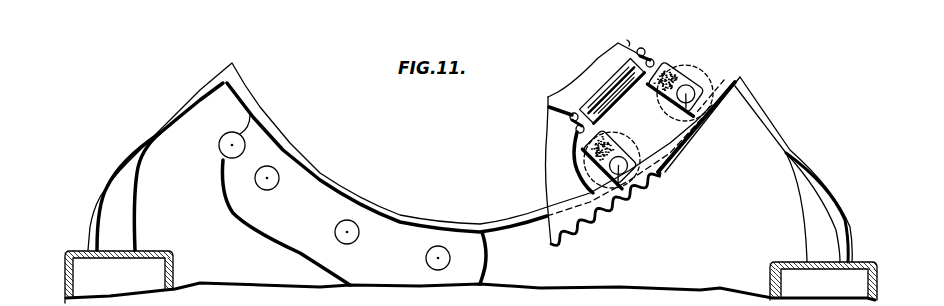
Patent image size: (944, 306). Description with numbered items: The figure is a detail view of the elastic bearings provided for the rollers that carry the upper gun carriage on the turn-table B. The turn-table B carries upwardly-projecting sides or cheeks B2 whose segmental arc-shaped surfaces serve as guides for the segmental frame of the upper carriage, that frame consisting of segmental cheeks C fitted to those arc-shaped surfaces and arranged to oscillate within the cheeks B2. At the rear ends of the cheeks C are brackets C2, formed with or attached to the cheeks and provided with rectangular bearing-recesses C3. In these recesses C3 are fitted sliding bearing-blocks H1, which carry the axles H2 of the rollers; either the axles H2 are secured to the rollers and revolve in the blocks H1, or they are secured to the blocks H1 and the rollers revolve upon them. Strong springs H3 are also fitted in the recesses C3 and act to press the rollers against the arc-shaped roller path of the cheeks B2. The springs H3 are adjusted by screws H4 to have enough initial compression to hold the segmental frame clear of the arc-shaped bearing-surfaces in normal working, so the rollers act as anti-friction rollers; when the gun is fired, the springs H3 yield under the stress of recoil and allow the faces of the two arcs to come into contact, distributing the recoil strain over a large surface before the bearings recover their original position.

The turn-table B is at (468, 277).
The upwardly-projecting sides or cheeks B2 is at (470, 174).
The segmental cheeks C is at (594, 142).
The brackets C2 is at (657, 135).
The rectangular bearing-recesses C3 is at (583, 235).
The bearing-blocks H1 is at (620, 144).
The axles H2 is at (614, 185).
The springs H3 is at (597, 105).
The screws H4 is at (655, 54).